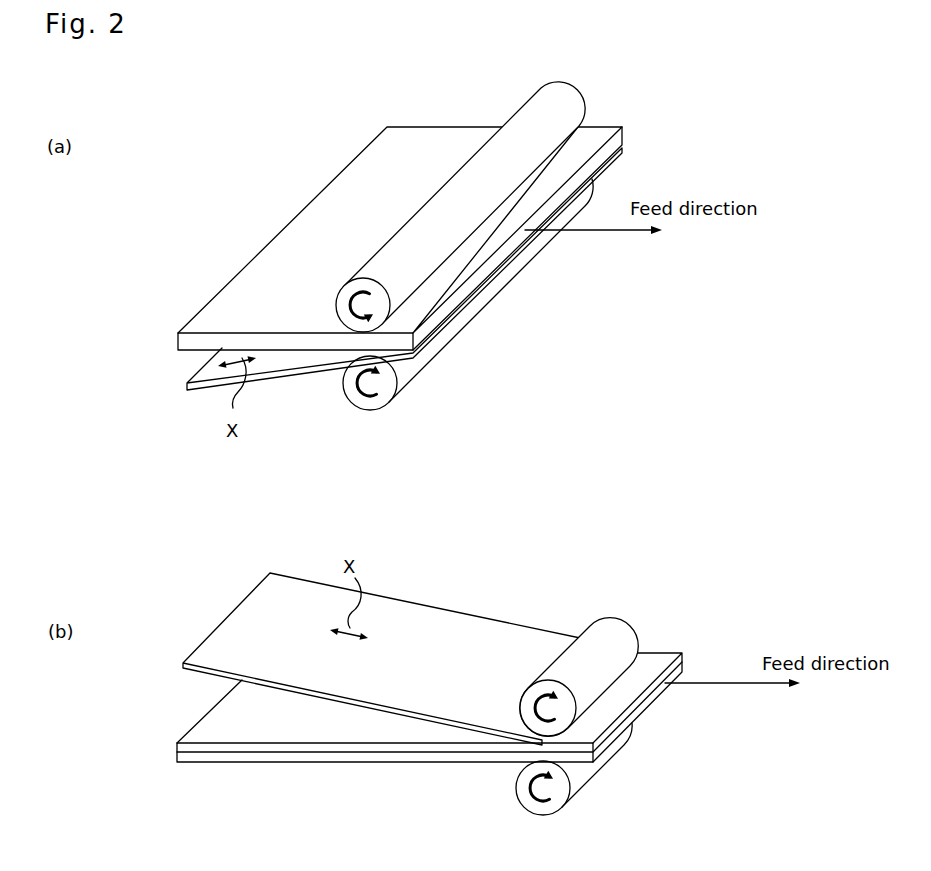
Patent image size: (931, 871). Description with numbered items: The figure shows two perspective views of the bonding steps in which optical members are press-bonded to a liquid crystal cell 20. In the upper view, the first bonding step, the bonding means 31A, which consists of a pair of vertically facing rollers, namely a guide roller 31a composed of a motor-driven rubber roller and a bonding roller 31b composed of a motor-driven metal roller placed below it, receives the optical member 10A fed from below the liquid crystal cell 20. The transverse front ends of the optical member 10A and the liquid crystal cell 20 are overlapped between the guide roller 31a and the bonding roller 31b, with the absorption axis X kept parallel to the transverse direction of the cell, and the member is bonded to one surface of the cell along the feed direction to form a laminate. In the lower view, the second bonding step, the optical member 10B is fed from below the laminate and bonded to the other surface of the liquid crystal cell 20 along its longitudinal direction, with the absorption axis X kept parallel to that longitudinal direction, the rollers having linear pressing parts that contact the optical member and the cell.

The liquid crystal cell 20 is at (277, 257).
The optical member 10A is at (305, 367).
The optical member 10B is at (435, 622).
The guide roller 31a is at (408, 270).
The bonding roller 31b is at (430, 352).
The bonding means 31A is at (606, 448).